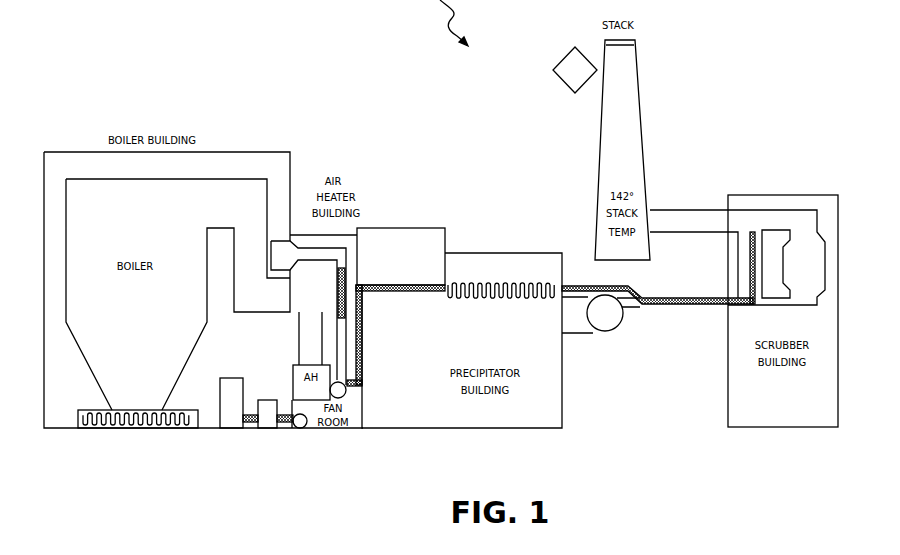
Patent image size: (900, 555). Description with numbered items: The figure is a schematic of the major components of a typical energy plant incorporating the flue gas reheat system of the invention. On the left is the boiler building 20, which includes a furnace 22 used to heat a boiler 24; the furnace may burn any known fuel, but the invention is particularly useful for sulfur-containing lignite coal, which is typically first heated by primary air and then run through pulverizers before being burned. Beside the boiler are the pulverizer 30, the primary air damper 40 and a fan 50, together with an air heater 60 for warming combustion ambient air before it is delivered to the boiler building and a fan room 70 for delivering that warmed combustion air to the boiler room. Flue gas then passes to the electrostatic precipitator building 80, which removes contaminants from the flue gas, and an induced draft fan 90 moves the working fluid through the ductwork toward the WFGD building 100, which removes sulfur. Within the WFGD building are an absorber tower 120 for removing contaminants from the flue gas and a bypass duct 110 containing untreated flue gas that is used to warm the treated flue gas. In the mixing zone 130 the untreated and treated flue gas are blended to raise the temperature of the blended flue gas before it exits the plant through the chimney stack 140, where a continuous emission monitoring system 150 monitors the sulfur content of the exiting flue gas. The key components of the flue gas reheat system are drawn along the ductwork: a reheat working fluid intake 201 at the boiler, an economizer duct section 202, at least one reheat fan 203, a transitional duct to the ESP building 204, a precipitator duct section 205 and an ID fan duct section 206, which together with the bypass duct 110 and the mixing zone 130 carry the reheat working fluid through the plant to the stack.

The boiler building 20 is at (203, 281).
The furnace 22 is at (143, 429).
The boiler 24 is at (178, 294).
The pulverizer 30 is at (235, 417).
The primary air damper 40 is at (270, 418).
The fan 50 is at (302, 423).
The air heater 60 is at (311, 356).
The fan room 70 is at (358, 428).
The electrostatic precipitator building 80 is at (462, 340).
The induced draft fan 90 is at (607, 322).
The WFGD building 100 is at (783, 311).
The bypass duct 110 is at (751, 277).
The absorber tower 120 is at (808, 272).
The mixing zone 130 is at (737, 257).
The chimney stack 140 is at (620, 125).
The continuous emission monitoring system 150 is at (575, 70).
The reheat working fluid intake 201 is at (288, 253).
The economizer duct section 202 is at (335, 295).
The reheat fan 203 is at (347, 392).
The transitional duct to the ESP building 204 is at (363, 332).
The precipitator duct section 205 is at (502, 295).
The ID fan duct section 206 is at (677, 307).